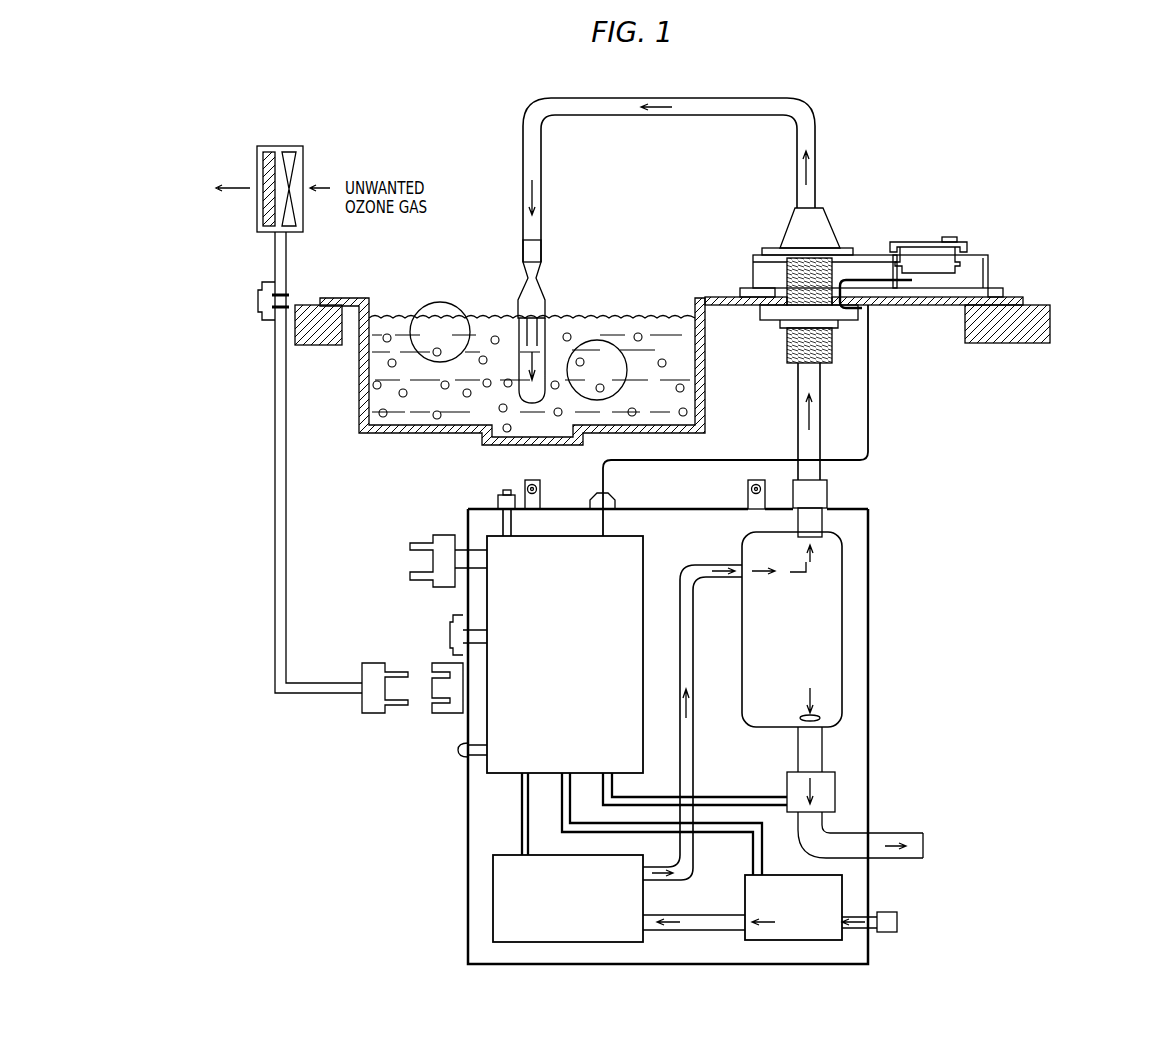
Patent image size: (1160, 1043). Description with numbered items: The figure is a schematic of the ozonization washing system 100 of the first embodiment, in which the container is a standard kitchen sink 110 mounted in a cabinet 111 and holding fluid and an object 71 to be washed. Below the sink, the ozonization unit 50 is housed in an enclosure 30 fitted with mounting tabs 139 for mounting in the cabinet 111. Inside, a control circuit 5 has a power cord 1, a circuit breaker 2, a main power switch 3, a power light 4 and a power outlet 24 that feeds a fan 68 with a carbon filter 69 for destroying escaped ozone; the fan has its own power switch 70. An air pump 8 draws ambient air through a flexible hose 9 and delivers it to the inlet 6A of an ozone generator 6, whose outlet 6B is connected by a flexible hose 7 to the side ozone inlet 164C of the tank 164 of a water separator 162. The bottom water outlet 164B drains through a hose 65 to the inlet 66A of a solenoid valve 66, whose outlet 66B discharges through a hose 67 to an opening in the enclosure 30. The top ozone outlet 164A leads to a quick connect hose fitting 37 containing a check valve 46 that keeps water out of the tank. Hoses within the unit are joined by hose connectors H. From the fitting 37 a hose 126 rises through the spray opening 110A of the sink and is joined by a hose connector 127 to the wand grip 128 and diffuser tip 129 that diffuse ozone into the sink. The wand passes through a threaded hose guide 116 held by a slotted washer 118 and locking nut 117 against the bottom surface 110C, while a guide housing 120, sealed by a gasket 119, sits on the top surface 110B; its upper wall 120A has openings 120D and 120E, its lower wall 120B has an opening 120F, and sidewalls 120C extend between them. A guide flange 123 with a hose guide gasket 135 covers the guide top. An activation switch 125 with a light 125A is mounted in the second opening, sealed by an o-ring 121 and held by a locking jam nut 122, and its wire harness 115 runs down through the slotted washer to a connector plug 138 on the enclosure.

The power cord 1 is at (440, 535).
The circuit breaker 2 is at (498, 498).
The main power switch 3 is at (452, 626).
The power light 4 is at (460, 748).
The control circuit 5 is at (487, 768).
The ozone generator 6 is at (493, 866).
The inlet 6A is at (652, 930).
The outlet 6B is at (660, 870).
The flexible hose 7 is at (685, 565).
The air pump 8 is at (755, 941).
The flexible hose 9 is at (878, 932).
The power outlet 24 is at (435, 664).
The enclosure 30 is at (467, 920).
The quick connect hose fitting 37 is at (828, 494).
The check valve 46 is at (828, 482).
The ozonization unit 50 is at (408, 905).
The hose 65 is at (798, 762).
The solenoid valve 66 is at (835, 788).
The inlet 66A is at (798, 772).
The outlet 66B is at (835, 812).
The hose 67 is at (912, 833).
The fan 68 is at (289, 152).
The carbon filter 69 is at (269, 152).
The power switch 70 is at (258, 290).
The object 71 is at (440, 302).
The ozonization washing system 100 is at (428, 108).
The sink 110 is at (364, 440).
The spray opening 110A is at (760, 322).
The top surface 110B is at (1020, 297).
The bottom surface 110C is at (925, 306).
The cabinet 111 is at (1025, 344).
The wire harness 115 is at (870, 424).
The hose guide 116 is at (790, 362).
The locking nut 117 is at (780, 328).
The slotted washer 118 is at (765, 312).
The gasket 119 is at (740, 292).
The guide housing 120 is at (865, 255).
The upper wall 120A is at (758, 262).
The lower wall 120B is at (878, 308).
The sidewalls 120C is at (988, 258).
The opening 120D is at (780, 250).
The opening 120E is at (960, 238).
The opening 120F is at (760, 274).
The o-ring 121 is at (885, 258).
The locking jam nut 122 is at (960, 250).
The guide flange 123 is at (797, 212).
The activation switch 125 is at (917, 242).
The light 125A is at (949, 237).
The hose 126 is at (522, 210).
The hose connector 127 is at (541, 252).
The wand grip 128 is at (545, 300).
The diffuser tip 129 is at (522, 330).
The hose guide gasket 135 is at (836, 252).
The connector plug 138 is at (595, 493).
The mounting tabs 139 is at (525, 485).
The water separator 162 is at (852, 678).
The tank 164 is at (842, 612).
The top ozone outlet 164A is at (822, 535).
The bottom water outlet 164B is at (822, 718).
The side ozone inlet 164C is at (742, 580).
The hose connectors H is at (742, 560).